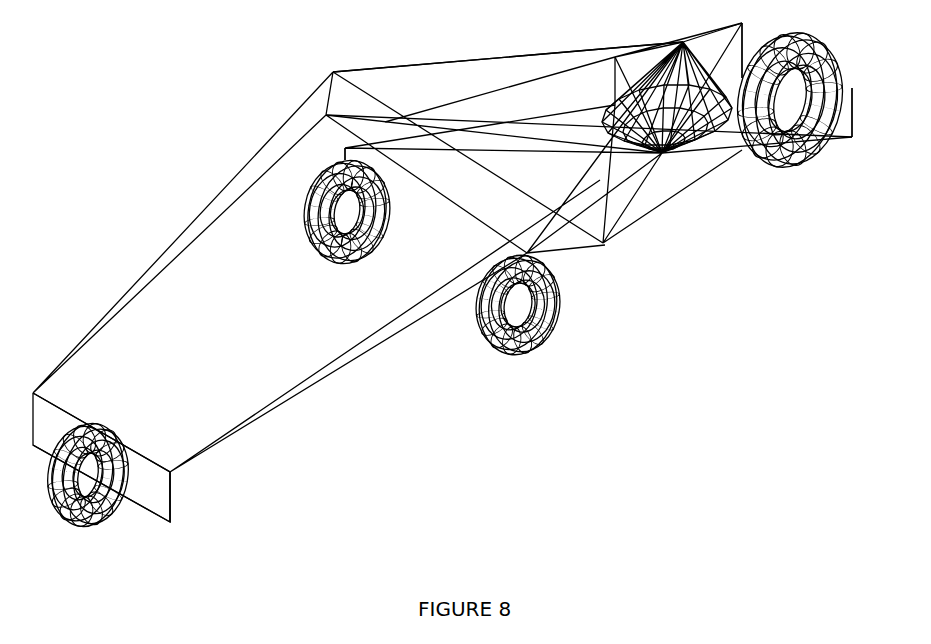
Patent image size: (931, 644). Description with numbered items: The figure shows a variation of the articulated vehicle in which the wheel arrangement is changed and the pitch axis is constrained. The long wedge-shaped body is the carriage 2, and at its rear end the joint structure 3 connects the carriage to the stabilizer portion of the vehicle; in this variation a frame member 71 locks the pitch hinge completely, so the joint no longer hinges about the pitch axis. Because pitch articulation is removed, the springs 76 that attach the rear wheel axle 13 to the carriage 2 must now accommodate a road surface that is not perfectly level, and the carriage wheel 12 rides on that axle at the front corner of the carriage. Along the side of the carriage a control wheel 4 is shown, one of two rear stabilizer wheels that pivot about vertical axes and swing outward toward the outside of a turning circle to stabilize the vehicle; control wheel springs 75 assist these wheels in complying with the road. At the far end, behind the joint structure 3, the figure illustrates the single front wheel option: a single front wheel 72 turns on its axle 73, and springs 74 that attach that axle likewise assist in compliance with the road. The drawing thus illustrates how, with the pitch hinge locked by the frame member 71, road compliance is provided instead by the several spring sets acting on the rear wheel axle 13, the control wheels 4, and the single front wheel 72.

The carriage 2 is at (183, 231).
The joint structure 3 is at (653, 202).
The control wheel 4 is at (548, 345).
The carriage wheel 12 is at (97, 520).
The rear wheel axle 13 is at (152, 516).
The frame member 71 is at (447, 57).
The single front wheel 72 is at (790, 165).
The axle 73 is at (840, 133).
The springs 74 is at (855, 110).
The control wheel springs 75 is at (345, 160).
The springs 76 is at (172, 498).